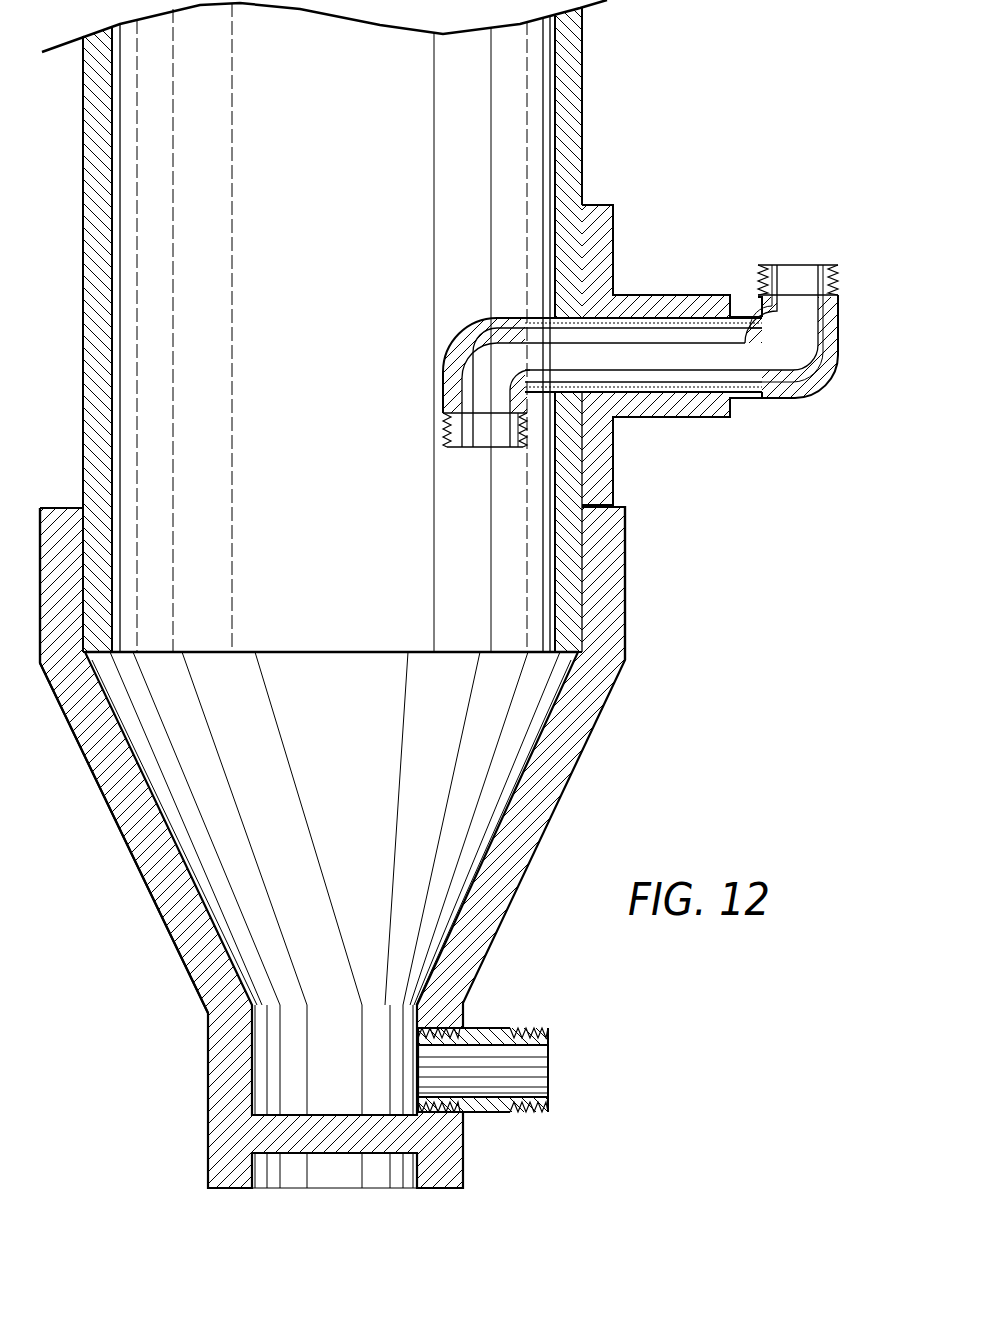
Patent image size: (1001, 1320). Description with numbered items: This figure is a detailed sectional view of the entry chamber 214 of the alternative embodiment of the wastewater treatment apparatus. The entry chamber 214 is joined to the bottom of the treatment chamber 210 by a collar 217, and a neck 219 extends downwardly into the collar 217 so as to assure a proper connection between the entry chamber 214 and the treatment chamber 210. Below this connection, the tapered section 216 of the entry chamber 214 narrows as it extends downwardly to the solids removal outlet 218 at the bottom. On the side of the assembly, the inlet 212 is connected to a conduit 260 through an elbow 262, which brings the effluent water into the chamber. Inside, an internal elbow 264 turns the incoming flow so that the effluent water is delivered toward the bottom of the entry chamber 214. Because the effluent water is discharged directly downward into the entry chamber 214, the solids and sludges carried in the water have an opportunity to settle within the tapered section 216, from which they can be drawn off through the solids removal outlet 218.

The treatment chamber 210 is at (565, 617).
The inlet 212 is at (607, 252).
The entry chamber 214 is at (625, 633).
The tapered section 216 is at (153, 905).
The collar 217 is at (613, 573).
The solids removal outlet 218 is at (525, 1073).
The neck 219 is at (565, 540).
The conduit 260 is at (798, 262).
The elbow 262 is at (797, 397).
The internal elbow 264 is at (445, 335).